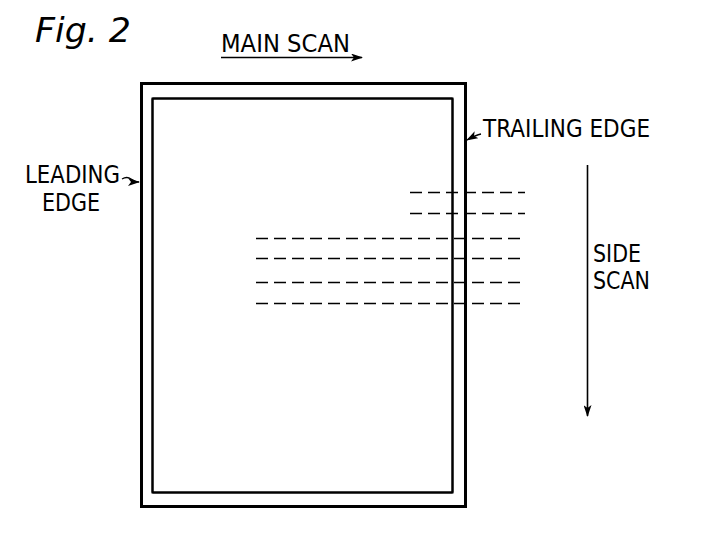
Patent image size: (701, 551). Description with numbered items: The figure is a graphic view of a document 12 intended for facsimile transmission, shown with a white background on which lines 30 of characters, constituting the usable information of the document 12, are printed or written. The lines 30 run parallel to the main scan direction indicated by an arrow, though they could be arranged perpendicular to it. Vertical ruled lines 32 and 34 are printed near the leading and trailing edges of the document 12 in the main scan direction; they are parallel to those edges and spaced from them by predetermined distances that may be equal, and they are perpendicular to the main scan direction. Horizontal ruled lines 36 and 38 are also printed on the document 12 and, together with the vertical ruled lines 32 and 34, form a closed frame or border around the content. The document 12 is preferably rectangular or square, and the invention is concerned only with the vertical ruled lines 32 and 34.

The document 12 is at (314, 397).
The lines of characters 30 is at (526, 203).
The vertical ruled line 32 is at (153, 366).
The vertical ruled line 34 is at (453, 405).
The horizontal ruled line 36 is at (286, 100).
The horizontal ruled line 38 is at (300, 492).